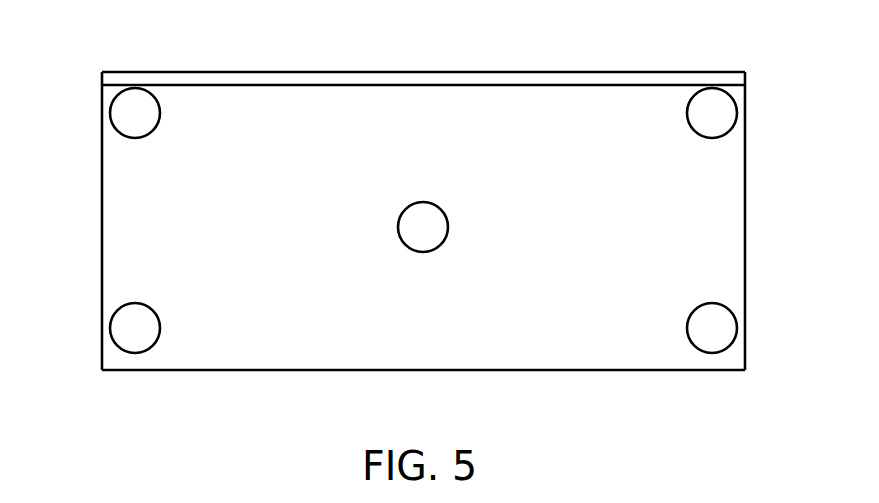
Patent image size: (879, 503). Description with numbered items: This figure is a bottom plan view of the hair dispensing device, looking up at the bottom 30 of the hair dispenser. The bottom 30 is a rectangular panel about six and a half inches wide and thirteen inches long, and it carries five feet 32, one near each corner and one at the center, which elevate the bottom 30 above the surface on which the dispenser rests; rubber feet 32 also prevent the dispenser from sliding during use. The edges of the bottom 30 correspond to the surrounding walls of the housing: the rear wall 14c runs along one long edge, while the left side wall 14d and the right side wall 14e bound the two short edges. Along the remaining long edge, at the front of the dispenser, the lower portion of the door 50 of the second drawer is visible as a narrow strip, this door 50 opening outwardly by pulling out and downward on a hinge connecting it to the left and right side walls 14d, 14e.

The door 50 is at (423, 72).
The bottom 30 is at (421, 221).
The feet 32 is at (110, 114).
The rear wall 14c is at (260, 370).
The left side wall 14d is at (102, 265).
The right side wall 14e is at (745, 265).